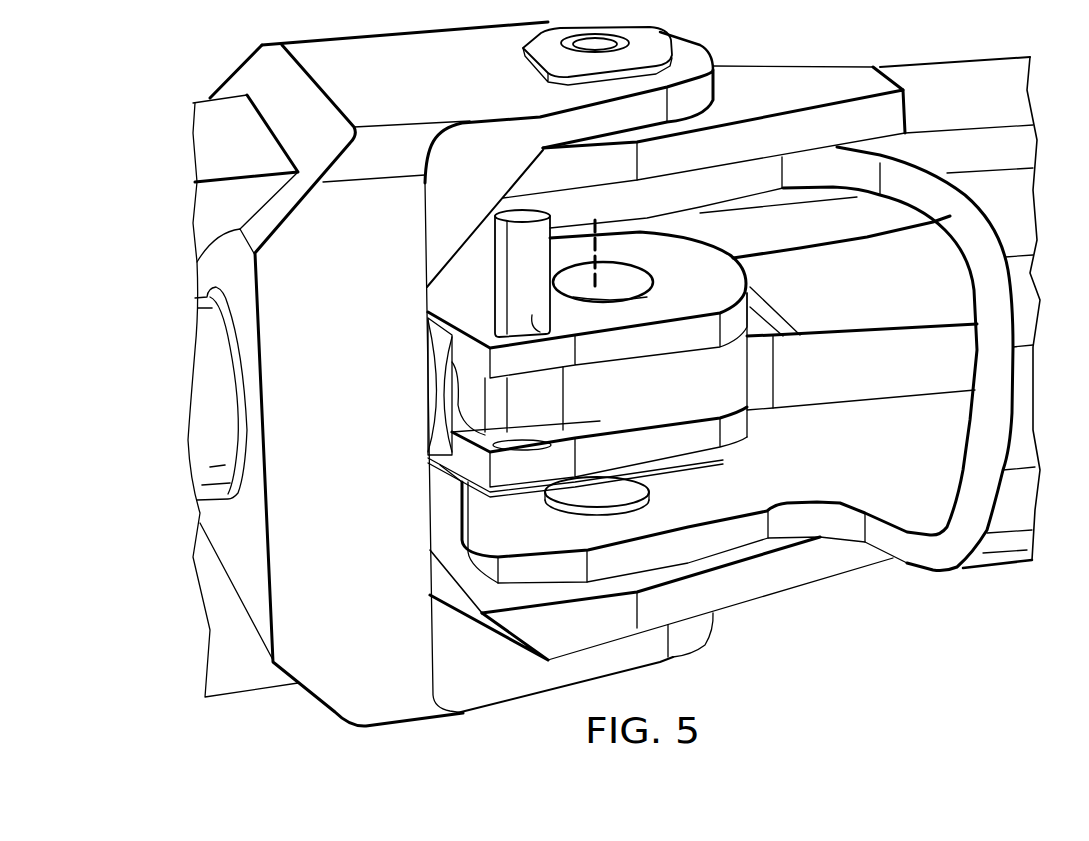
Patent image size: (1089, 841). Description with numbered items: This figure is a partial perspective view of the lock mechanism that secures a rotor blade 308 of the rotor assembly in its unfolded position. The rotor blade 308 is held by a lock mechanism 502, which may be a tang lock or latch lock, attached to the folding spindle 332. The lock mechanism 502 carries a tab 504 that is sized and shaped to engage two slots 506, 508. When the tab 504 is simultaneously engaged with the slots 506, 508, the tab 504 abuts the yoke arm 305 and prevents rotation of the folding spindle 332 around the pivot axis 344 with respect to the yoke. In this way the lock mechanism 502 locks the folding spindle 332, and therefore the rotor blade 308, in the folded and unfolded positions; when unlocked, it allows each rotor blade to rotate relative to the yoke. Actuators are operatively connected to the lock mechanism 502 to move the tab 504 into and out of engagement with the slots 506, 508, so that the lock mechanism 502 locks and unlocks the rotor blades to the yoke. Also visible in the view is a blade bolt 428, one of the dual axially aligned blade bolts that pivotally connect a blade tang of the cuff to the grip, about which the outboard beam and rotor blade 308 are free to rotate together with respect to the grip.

The rotor blade 308 is at (211, 132).
The yoke arm 305 is at (840, 388).
The lock mechanism 502 is at (571, 323).
The tab 504 is at (553, 277).
The folding spindle 332 is at (689, 297).
The pivot axis 344 is at (603, 287).
The slot 508 is at (532, 315).
The slot 506 is at (524, 445).
The blade bolt 428 is at (643, 503).